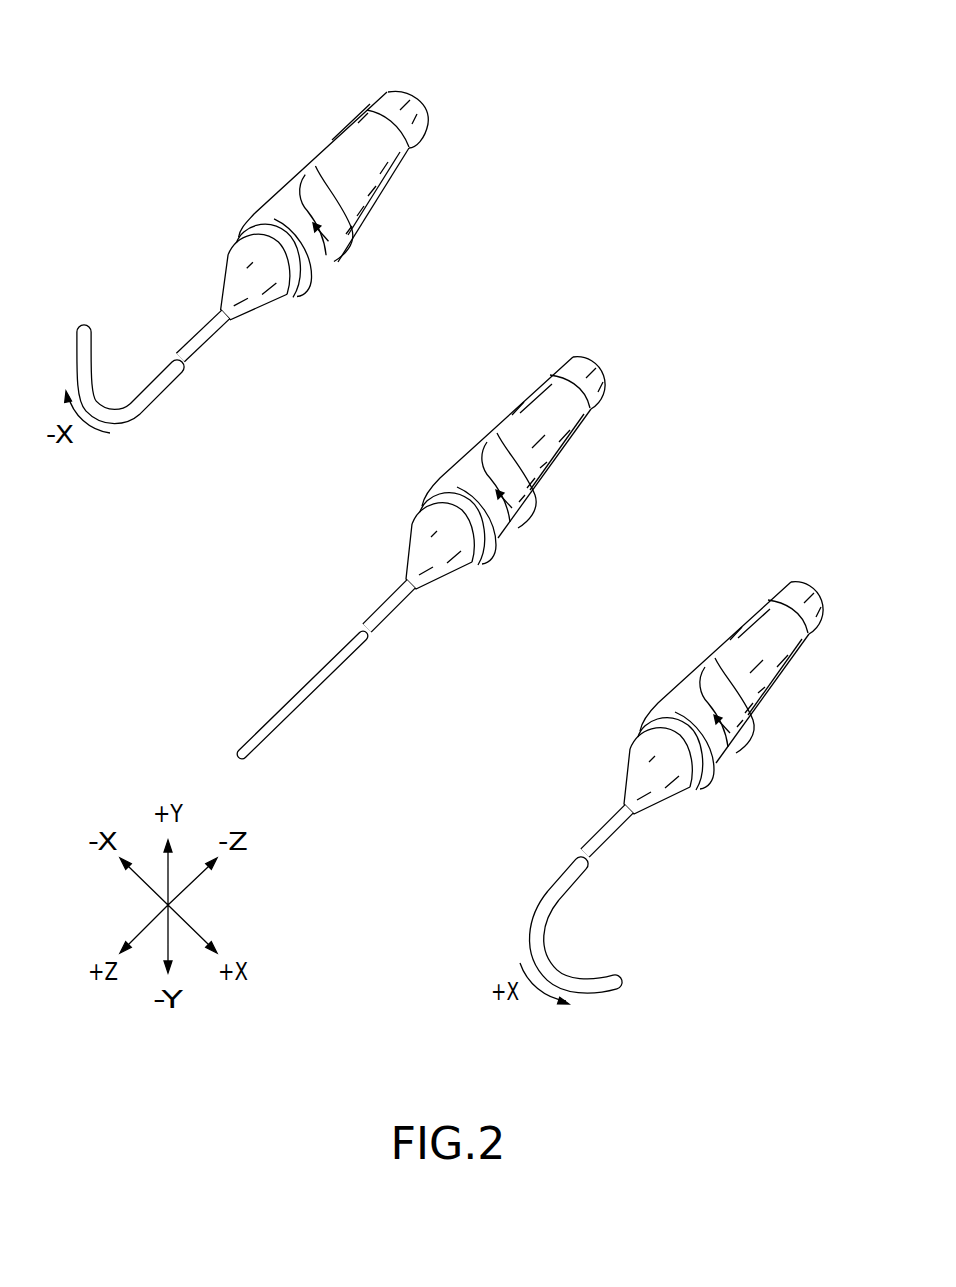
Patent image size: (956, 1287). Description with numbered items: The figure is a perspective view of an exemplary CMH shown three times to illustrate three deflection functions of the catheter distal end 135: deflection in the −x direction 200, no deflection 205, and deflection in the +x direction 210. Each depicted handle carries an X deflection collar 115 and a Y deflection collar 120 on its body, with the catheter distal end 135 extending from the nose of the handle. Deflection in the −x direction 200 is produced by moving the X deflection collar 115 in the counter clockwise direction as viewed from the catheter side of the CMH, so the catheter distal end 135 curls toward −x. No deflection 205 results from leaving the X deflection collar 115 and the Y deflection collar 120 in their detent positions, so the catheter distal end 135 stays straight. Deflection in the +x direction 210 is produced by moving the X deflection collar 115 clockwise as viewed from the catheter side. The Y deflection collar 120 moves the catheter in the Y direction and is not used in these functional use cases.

The deflection in the −x direction 200 is at (350, 104).
The no deflection 205 is at (556, 345).
The deflection in the +x direction 210 is at (776, 582).
The X deflection collar 115 is at (272, 197).
The Y deflection collar 120 is at (310, 177).
The catheter distal end 135 is at (131, 432).